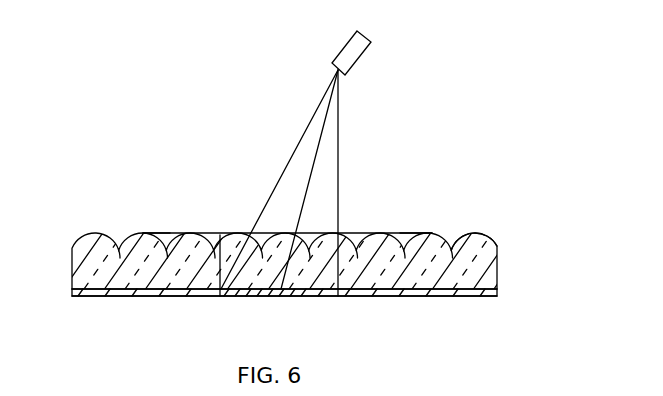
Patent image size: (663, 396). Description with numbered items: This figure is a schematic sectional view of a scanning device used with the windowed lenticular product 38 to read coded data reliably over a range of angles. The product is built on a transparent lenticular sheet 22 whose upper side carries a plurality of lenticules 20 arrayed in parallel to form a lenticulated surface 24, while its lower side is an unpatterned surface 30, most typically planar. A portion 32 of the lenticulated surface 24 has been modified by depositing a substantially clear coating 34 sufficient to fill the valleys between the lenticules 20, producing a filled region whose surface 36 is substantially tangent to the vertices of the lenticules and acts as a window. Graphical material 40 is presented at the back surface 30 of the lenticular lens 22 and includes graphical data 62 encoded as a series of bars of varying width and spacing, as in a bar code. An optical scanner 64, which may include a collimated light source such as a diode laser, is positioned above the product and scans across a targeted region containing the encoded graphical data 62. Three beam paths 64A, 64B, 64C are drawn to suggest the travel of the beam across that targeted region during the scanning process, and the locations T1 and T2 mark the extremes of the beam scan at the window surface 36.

The lenticules 20 is at (72, 246).
The transparent lenticular sheet 22 is at (516, 267).
The lenticulated surface 24 is at (479, 232).
The unpatterned surface 30 is at (467, 297).
The portion of the lenticulated surface 32 is at (388, 208).
The substantially clear coating 34 is at (358, 233).
The surface 36 is at (220, 234).
The windowed lenticular product 38 is at (143, 178).
The graphical material 40 is at (392, 297).
The graphical data 62 is at (235, 297).
The optical scanner 64 is at (347, 53).
The beam path 64A is at (325, 97).
The beam path 64B is at (322, 125).
The beam path 64C is at (339, 125).
The location T1 is at (143, 233).
The location T2 is at (430, 233).